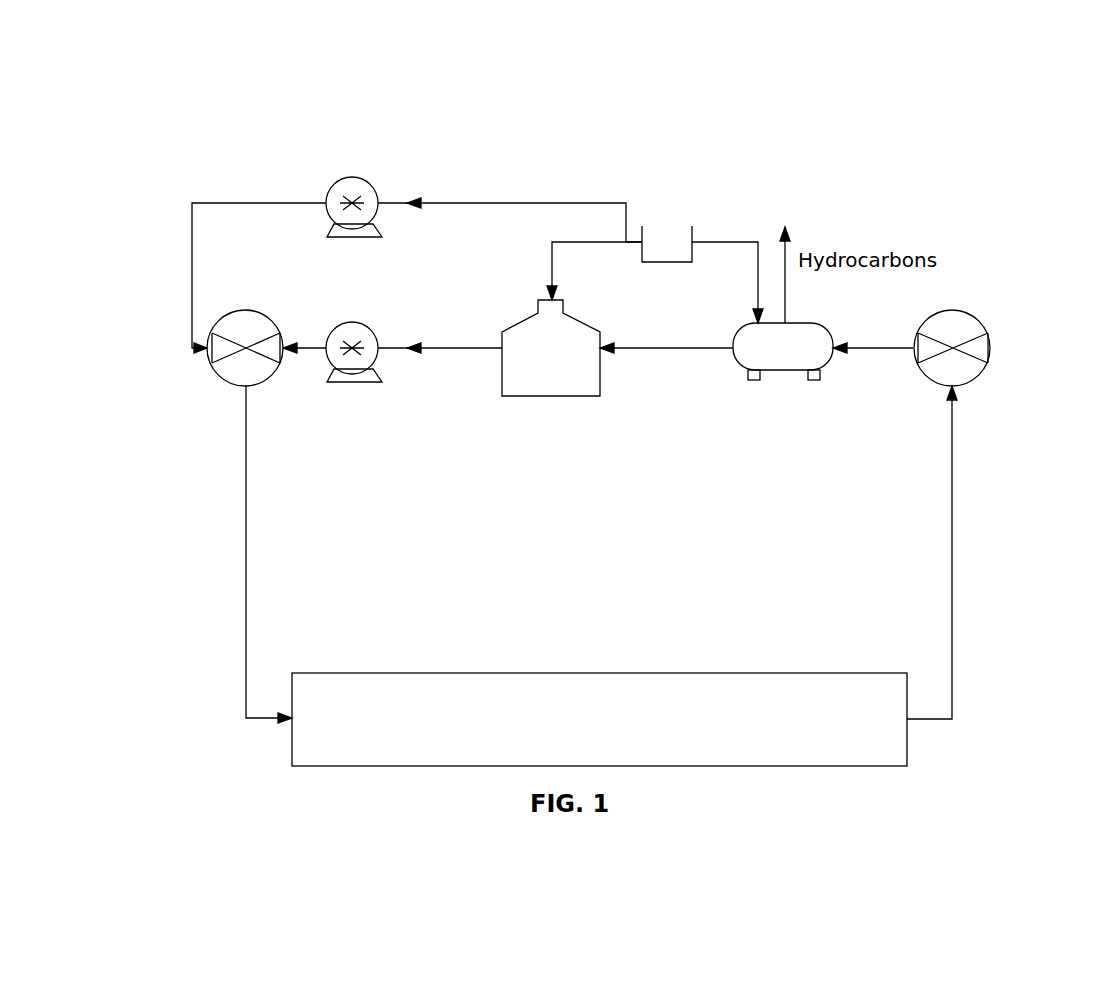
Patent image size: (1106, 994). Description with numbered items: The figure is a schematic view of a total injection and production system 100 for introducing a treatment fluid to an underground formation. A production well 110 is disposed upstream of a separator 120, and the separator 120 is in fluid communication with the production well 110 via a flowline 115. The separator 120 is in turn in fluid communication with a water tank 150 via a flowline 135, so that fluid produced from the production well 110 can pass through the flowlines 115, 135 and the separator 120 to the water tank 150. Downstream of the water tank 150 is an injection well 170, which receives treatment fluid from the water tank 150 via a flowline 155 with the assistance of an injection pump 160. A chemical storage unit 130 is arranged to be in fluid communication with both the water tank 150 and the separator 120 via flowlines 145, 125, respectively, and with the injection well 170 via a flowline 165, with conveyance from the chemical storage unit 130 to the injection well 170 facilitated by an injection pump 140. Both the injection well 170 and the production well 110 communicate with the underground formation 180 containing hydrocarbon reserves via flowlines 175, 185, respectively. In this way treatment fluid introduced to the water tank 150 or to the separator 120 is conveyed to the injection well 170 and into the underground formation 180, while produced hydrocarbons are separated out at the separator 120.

The total injection and production system 100 is at (136, 84).
The production well 110 is at (975, 382).
The flowline 115 is at (870, 348).
The separator 120 is at (783, 371).
The flowline 125 is at (722, 242).
The chemical storage unit 130 is at (659, 240).
The flowline 135 is at (665, 349).
The injection pump 140 is at (353, 177).
The flowline 145 is at (510, 203).
The water tank 150 is at (550, 397).
The flowline 155 is at (445, 349).
The injection pump 160 is at (356, 322).
The flowline 165 is at (192, 244).
The injection well 170 is at (222, 380).
The flowline 175 is at (246, 533).
The underground formation 180 is at (600, 673).
The flowline 185 is at (952, 533).